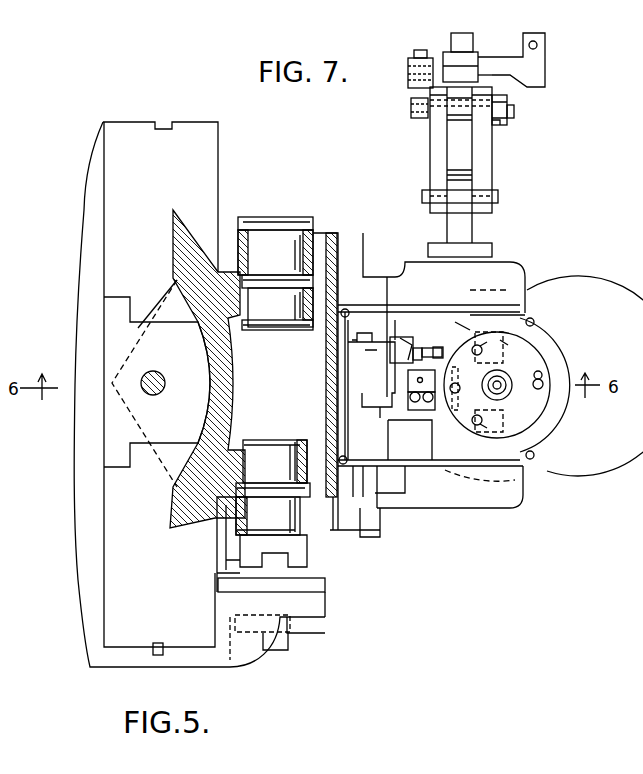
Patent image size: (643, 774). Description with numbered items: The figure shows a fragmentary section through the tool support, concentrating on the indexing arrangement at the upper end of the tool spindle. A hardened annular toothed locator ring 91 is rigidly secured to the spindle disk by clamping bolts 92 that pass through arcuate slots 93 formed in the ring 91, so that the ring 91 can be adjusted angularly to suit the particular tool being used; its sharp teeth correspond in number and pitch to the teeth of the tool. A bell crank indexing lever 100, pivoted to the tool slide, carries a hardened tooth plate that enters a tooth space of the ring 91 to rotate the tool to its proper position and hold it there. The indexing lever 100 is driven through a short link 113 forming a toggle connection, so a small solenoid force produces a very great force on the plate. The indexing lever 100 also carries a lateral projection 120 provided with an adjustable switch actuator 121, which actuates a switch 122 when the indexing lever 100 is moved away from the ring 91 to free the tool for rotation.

In FIG. 5, the toothed locator ring 91 is at (505, 340).
In FIG. 5, the clamping bolts 92 is at (545, 386).
In FIG. 5, the arcuate slots 93 is at (543, 374).
In FIG. 7, the indexing lever 100 is at (505, 125).
In FIG. 7, the short link 113 is at (505, 99).
In FIG. 7, the lateral projection 120 is at (546, 64).
In FIG. 5, the lateral projection 120 is at (440, 350).
In FIG. 7, the adjustable switch actuator 121 is at (537, 44).
In FIG. 5, the adjustable switch actuator 121 is at (462, 322).
In FIG. 5, the switch 122 is at (410, 345).